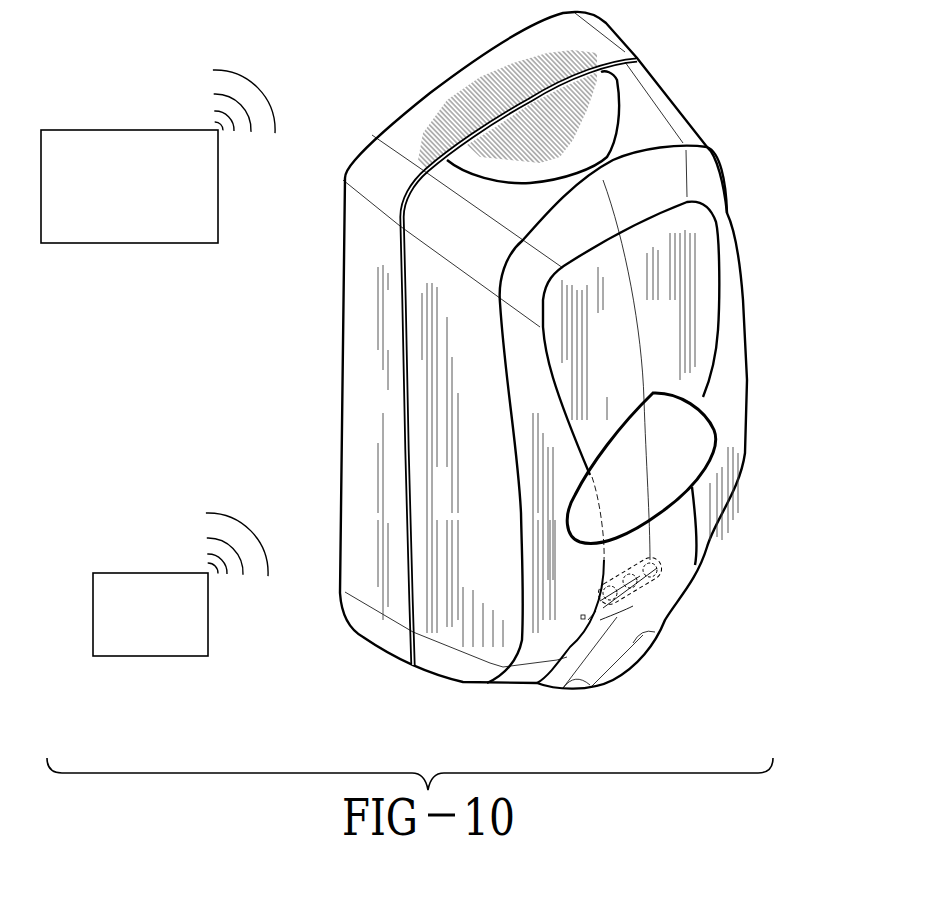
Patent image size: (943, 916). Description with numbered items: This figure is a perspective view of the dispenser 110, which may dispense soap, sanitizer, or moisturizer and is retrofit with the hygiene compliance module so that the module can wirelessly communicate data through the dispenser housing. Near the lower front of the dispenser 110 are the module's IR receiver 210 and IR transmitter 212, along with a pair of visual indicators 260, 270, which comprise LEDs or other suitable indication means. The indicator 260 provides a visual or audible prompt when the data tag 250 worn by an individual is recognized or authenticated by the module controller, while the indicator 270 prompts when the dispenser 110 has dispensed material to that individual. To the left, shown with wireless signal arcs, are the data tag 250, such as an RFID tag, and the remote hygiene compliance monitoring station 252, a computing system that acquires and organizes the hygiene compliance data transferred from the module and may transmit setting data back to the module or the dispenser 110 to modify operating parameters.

The dispenser 110 is at (571, 350).
The IR receiver 210 is at (661, 565).
The IR transmitter 212 is at (615, 600).
The data tag 250 is at (158, 574).
The hygiene compliance monitoring station 252 is at (105, 131).
The visual indicator 260 is at (640, 592).
The visual indicator 270 is at (655, 588).